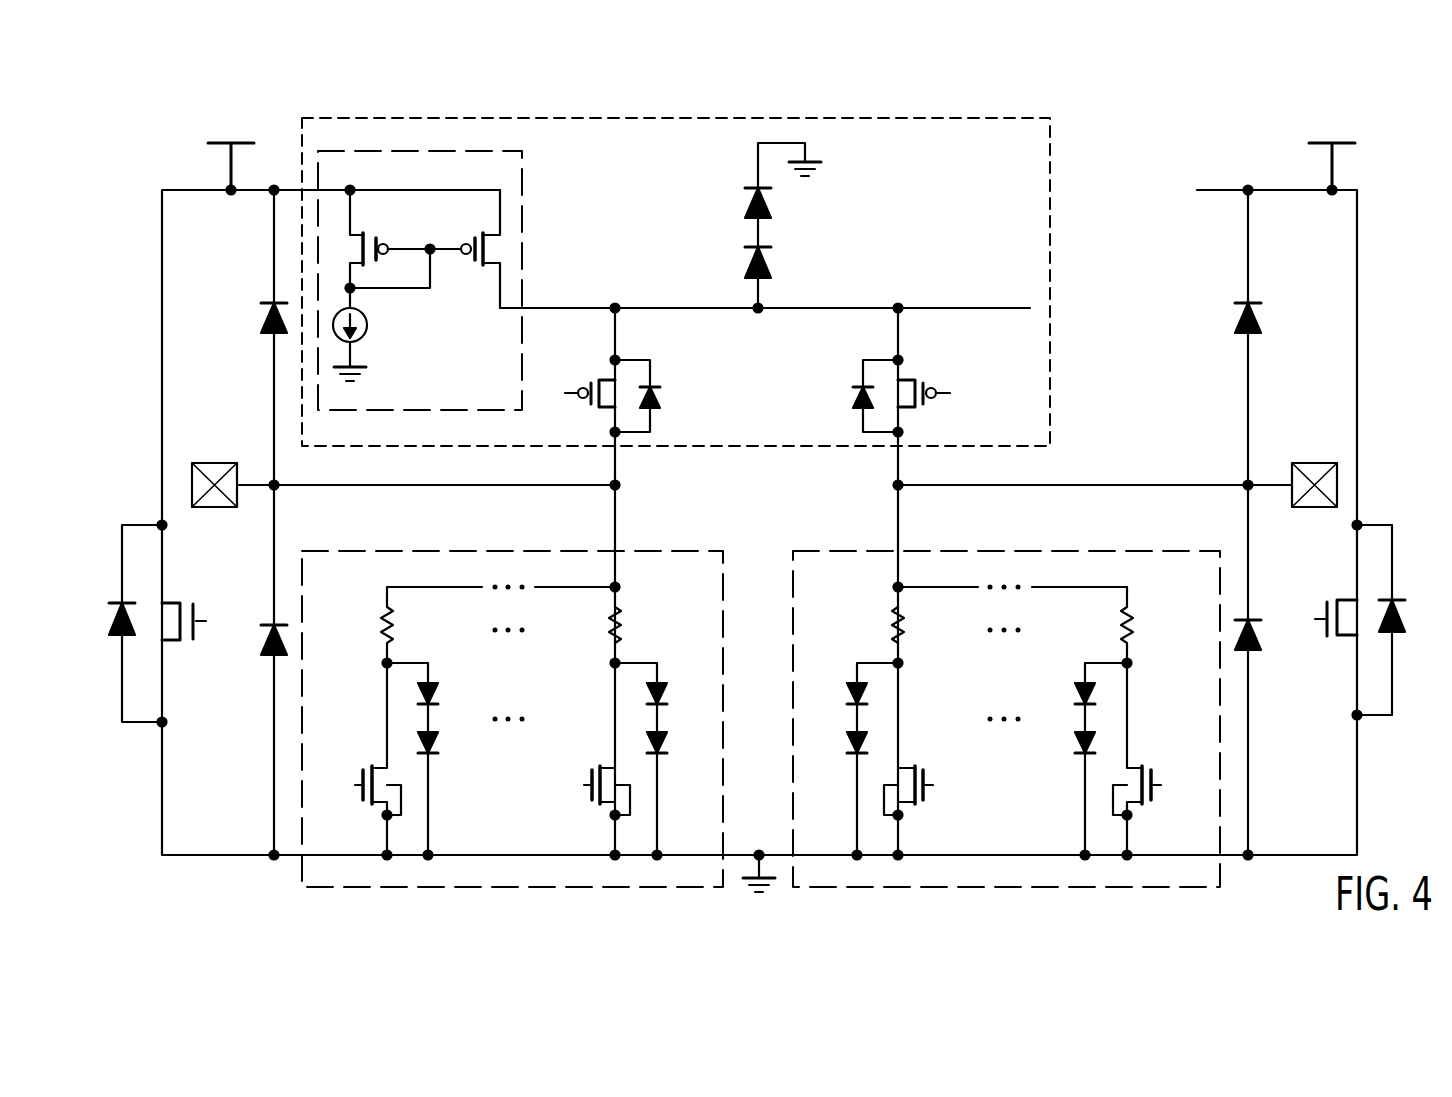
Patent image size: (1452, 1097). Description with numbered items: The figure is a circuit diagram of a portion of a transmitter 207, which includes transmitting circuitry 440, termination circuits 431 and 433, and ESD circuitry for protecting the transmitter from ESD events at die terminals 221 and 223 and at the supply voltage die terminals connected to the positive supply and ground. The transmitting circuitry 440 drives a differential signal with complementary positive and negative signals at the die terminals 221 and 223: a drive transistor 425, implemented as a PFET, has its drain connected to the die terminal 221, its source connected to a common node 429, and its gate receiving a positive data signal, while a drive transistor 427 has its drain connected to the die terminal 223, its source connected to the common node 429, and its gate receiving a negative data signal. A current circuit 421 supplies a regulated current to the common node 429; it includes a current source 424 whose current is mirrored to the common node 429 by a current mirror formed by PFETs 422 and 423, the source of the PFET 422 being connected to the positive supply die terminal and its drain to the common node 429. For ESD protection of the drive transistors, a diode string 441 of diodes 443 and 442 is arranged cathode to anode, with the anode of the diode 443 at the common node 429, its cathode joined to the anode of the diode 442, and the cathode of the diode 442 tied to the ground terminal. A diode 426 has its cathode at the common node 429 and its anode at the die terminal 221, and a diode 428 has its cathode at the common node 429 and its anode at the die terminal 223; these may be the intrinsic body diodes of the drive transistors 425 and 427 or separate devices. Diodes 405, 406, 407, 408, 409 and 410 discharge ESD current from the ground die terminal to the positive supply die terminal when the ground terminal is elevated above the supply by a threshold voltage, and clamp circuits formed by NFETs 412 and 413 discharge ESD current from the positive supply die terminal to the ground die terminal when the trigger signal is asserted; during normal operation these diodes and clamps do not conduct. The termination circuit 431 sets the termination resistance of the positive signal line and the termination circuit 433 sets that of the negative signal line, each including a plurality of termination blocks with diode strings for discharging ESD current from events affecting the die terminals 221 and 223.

The transmitter 207 is at (165, 127).
The die terminal 221 is at (231, 461).
The die terminal 223 is at (1297, 461).
The diode 405 is at (112, 628).
The diode 406 is at (263, 316).
The diode 407 is at (262, 650).
The diode 408 is at (1258, 318).
The diode 409 is at (1258, 643).
The diode 410 is at (1404, 628).
The NFET clamp circuit 412 is at (175, 600).
The NFET clamp circuit 413 is at (1344, 600).
The current circuit 421 is at (523, 193).
The PFET 422 is at (494, 270).
The PFET 423 is at (360, 236).
The current source 424 is at (367, 323).
The drive transistor 425 is at (607, 378).
The diode 426 is at (660, 402).
The drive transistor 427 is at (909, 378).
The diode 428 is at (856, 402).
The common node 429 is at (765, 296).
The termination circuit 431 is at (380, 550).
The termination circuit 433 is at (1148, 550).
The transmitting circuitry 440 is at (1052, 158).
The diode string 441 is at (795, 229).
The diode 442 is at (745, 203).
The diode 443 is at (745, 275).